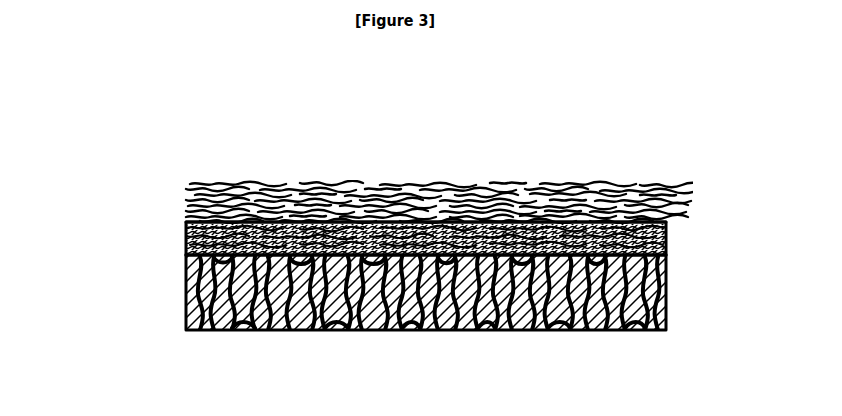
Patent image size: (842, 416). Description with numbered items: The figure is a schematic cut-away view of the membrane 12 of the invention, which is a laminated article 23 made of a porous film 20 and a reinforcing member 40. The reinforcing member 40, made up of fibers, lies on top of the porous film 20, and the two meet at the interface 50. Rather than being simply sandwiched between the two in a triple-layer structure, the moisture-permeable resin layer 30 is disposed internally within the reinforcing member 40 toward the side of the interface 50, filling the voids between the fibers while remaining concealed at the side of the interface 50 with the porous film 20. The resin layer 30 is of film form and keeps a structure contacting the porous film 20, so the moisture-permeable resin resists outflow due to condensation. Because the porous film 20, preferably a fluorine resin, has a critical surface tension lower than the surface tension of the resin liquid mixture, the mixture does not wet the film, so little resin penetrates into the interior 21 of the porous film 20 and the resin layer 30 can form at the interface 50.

The membrane 12 is at (446, 133).
The porous film 20 is at (666, 278).
The interior of the porous film 21 is at (188, 284).
The laminated article 23 is at (733, 180).
The moisture-permeable resin layer 30 is at (186, 229).
The reinforcing member 40 is at (662, 204).
The interface 50 is at (182, 250).